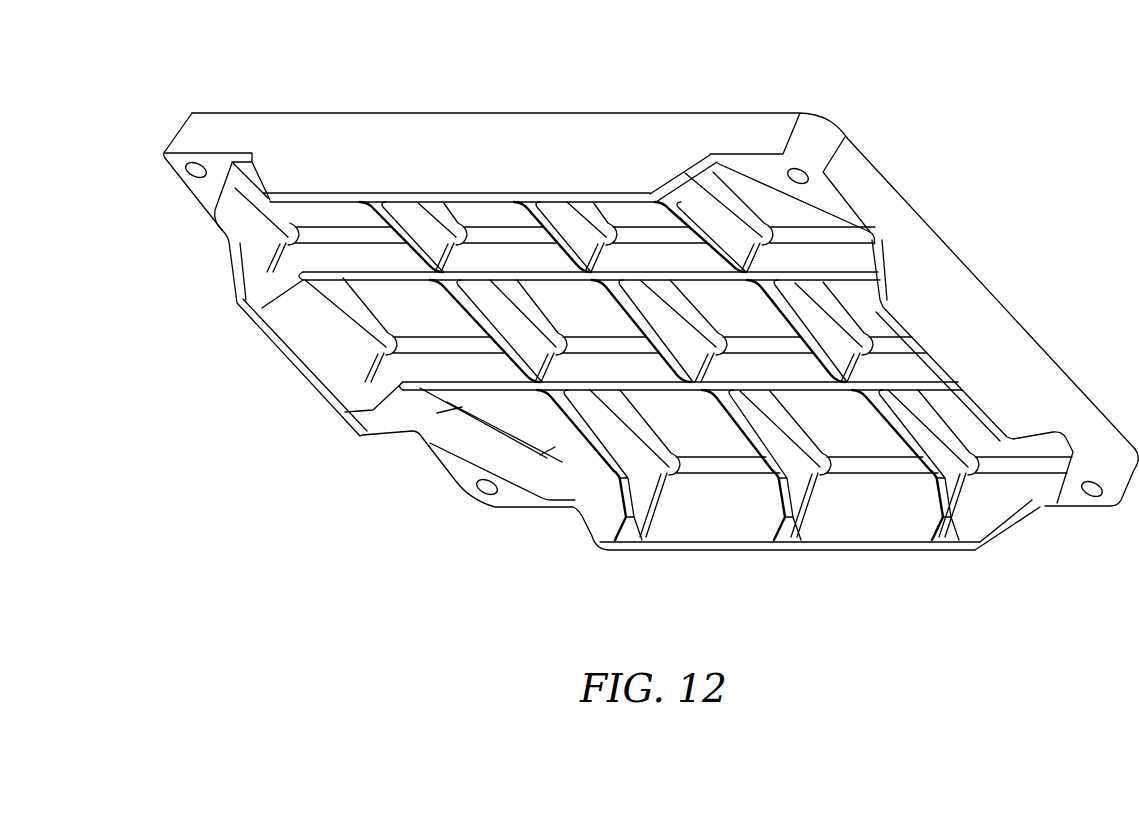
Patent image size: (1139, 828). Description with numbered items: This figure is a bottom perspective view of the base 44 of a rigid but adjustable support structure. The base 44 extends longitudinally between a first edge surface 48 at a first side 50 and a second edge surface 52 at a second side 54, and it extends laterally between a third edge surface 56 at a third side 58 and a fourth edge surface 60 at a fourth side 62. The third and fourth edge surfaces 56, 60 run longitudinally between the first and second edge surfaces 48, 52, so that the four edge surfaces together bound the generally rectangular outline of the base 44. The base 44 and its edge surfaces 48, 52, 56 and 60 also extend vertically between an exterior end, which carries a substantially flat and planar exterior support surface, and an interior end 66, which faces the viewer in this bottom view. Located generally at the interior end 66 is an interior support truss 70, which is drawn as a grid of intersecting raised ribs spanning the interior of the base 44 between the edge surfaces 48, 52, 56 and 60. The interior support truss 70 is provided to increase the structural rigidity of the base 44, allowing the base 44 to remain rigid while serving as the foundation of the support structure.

The base 44 is at (651, 337).
The first edge surface 48 is at (288, 297).
The first side 50 is at (310, 383).
The second edge surface 52 is at (1005, 373).
The second side 54 is at (1000, 328).
The third edge surface 56 is at (649, 244).
The third side 58 is at (487, 135).
The fourth edge surface 60 is at (806, 568).
The fourth side 62 is at (737, 552).
The interior end 66 is at (388, 458).
The interior support truss 70 is at (607, 466).